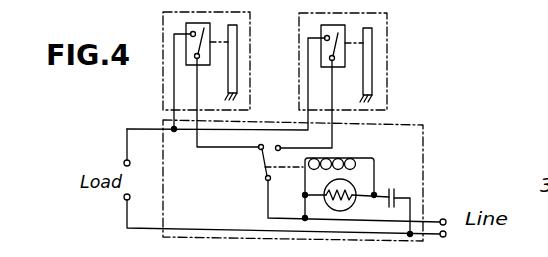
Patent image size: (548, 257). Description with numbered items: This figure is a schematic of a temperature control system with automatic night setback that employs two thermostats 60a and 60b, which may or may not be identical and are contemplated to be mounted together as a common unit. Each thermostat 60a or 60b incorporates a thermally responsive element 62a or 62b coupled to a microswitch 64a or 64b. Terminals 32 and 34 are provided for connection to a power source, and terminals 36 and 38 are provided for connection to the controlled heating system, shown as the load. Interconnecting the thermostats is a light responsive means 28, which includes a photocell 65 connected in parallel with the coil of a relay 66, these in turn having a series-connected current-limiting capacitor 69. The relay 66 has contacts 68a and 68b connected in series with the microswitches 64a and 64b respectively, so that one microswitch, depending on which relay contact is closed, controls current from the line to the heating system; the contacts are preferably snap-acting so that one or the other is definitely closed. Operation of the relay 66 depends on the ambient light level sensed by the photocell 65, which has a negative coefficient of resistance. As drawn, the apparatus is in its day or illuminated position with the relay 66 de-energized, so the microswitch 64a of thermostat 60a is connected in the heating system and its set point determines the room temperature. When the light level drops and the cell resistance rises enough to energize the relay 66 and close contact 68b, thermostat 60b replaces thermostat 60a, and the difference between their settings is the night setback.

The light responsive means 28 is at (405, 125).
The terminal 32 is at (444, 219).
The terminal 34 is at (445, 236).
The terminal 36 is at (124, 161).
The terminal 38 is at (124, 199).
The thermostat 60a is at (161, 74).
The thermostat 60b is at (390, 66).
The thermally responsive element 62a is at (237, 55).
The thermally responsive element 62b is at (372, 43).
The microswitch 64a is at (186, 23).
The microswitch 64b is at (321, 26).
The photocell 65 is at (354, 201).
The relay 66 is at (349, 157).
The relay contact 68a is at (258, 149).
The relay contact 68b is at (278, 145).
The current-limiting capacitor 69 is at (391, 188).